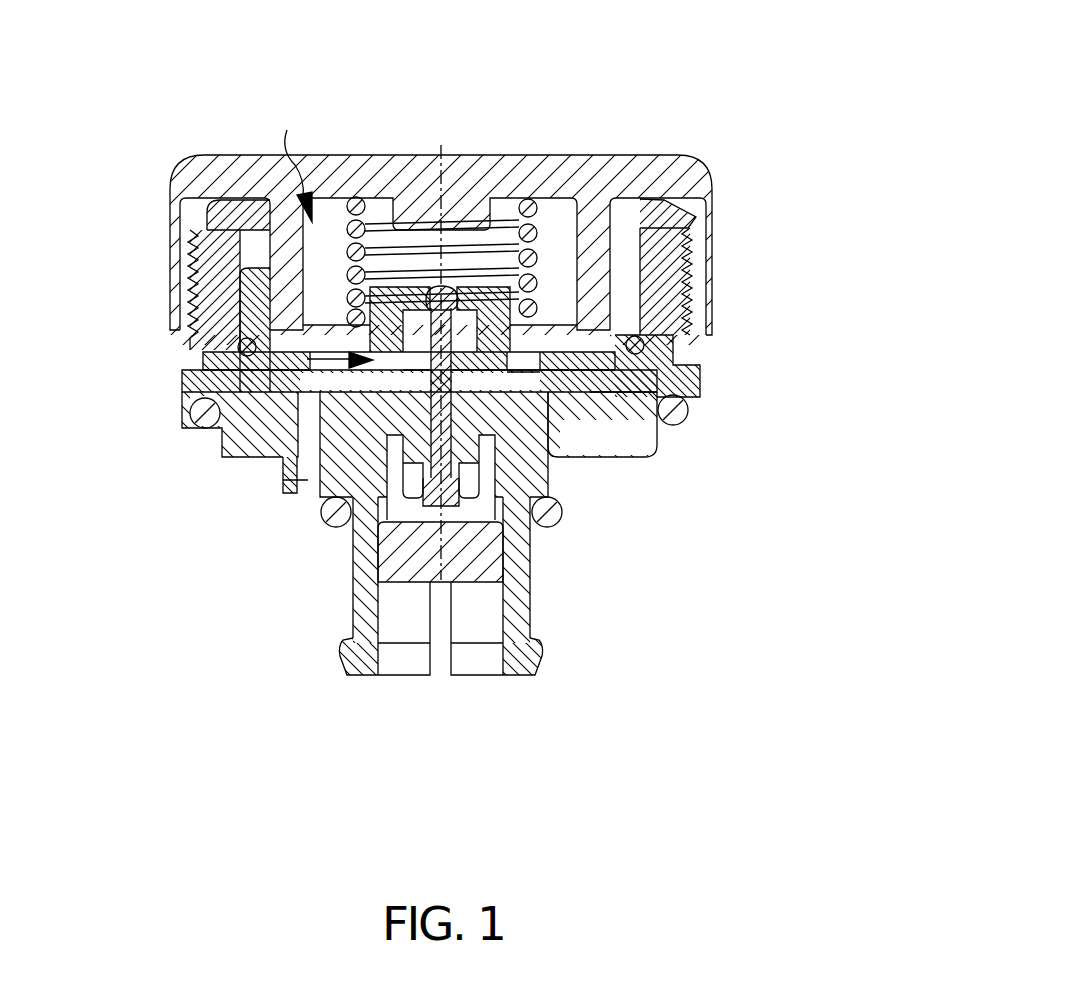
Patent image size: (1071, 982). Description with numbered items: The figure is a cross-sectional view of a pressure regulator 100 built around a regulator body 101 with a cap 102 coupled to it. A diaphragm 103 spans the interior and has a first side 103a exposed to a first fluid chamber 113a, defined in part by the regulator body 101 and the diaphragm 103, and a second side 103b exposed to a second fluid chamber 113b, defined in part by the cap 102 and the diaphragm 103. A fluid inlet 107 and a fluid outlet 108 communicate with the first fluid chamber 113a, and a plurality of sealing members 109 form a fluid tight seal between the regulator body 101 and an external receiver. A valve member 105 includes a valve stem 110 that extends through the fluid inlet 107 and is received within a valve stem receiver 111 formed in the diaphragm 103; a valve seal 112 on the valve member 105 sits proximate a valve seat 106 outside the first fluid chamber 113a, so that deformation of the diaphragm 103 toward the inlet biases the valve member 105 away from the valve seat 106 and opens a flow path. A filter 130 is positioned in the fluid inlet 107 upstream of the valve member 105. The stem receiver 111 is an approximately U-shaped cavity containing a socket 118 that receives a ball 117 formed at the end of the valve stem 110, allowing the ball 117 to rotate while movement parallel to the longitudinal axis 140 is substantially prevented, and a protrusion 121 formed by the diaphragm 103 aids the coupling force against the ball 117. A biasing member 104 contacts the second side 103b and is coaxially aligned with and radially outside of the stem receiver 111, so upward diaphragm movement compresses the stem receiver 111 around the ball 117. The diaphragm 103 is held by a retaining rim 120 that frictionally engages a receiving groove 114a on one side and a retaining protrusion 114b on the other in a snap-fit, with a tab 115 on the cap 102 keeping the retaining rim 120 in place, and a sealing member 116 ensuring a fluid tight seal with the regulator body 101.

The pressure regulator 100 is at (677, 85).
The regulator body 101 is at (657, 455).
The cap 102 is at (678, 155).
The diaphragm 103 is at (500, 360).
The first side 103a is at (545, 362).
The second side 103b is at (262, 305).
The biasing member 104 is at (529, 204).
The valve member 105 is at (425, 497).
The valve seat 106 is at (427, 447).
The fluid inlet 107 is at (406, 677).
The fluid outlet 108 is at (287, 480).
The sealing members 109 is at (688, 410).
The valve stem 110 is at (370, 390).
The valve stem receiver 111 is at (400, 314).
The valve seal 112 is at (487, 478).
The first fluid chamber 113a is at (182, 369).
The second fluid chamber 113b is at (288, 160).
The receiving groove 114a is at (645, 364).
The retaining protrusion 114b is at (688, 252).
The tab 115 is at (258, 228).
The sealing member 116 is at (668, 345).
The ball 117 is at (460, 305).
The socket 118 is at (442, 313).
The retaining rim 120 is at (680, 283).
The protrusion 121 is at (372, 369).
The filter 130 is at (448, 570).
The longitudinal axis 140 is at (440, 142).